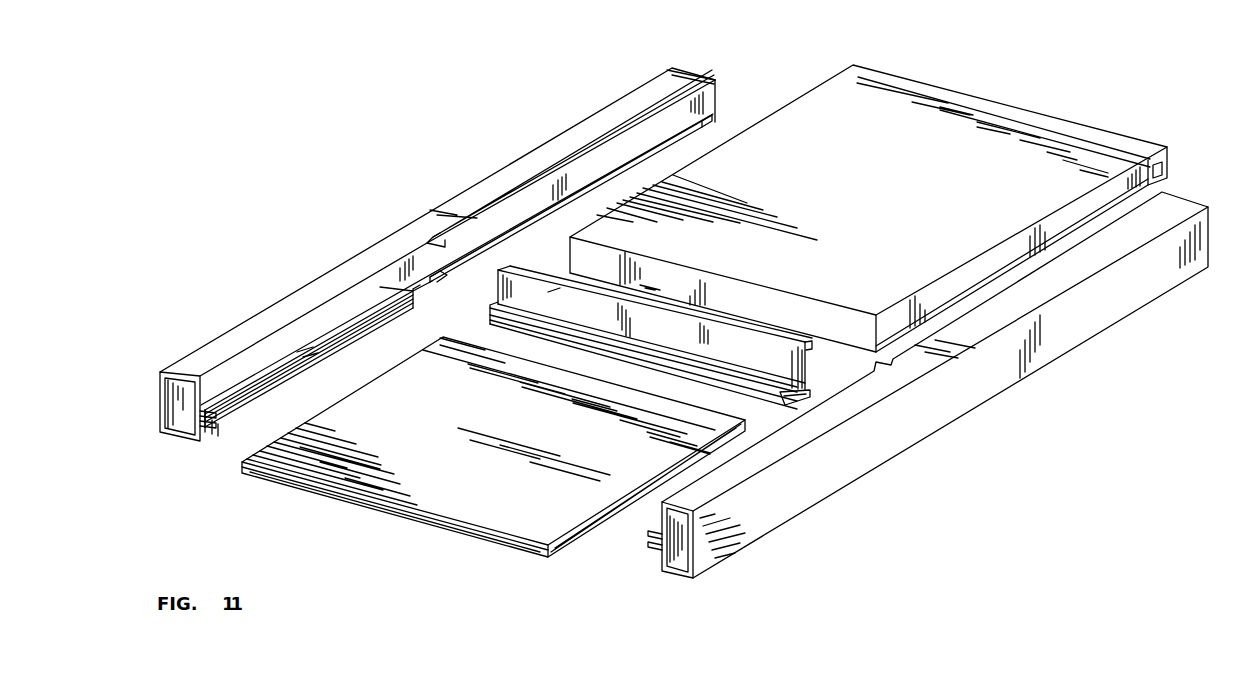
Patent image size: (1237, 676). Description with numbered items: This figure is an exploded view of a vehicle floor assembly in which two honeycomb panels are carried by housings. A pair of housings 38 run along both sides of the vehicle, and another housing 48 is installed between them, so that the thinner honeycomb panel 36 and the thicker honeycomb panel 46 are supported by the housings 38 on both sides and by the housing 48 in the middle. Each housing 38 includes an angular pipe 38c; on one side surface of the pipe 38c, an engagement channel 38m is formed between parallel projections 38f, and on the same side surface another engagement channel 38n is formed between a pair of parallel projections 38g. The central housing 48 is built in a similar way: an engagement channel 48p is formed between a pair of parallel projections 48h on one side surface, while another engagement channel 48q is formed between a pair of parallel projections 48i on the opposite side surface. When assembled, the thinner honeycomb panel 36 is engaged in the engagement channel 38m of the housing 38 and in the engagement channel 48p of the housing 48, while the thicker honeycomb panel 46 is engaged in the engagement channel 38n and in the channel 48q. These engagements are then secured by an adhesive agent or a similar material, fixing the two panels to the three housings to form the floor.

The honeycomb panel 36 is at (400, 487).
The housing 38 is at (160, 374).
The angular pipe 38c is at (162, 408).
The parallel projections 38f is at (205, 430).
The parallel projections 38g is at (724, 124).
The engagement channel 38m is at (262, 395).
The engagement channel 38n is at (592, 170).
The honeycomb panel 46 is at (978, 118).
The housing 48 is at (515, 276).
The parallel projections 48h is at (490, 316).
The parallel projections 48i is at (812, 348).
The engagement channel 48p is at (786, 400).
The engagement channel 48q is at (810, 374).